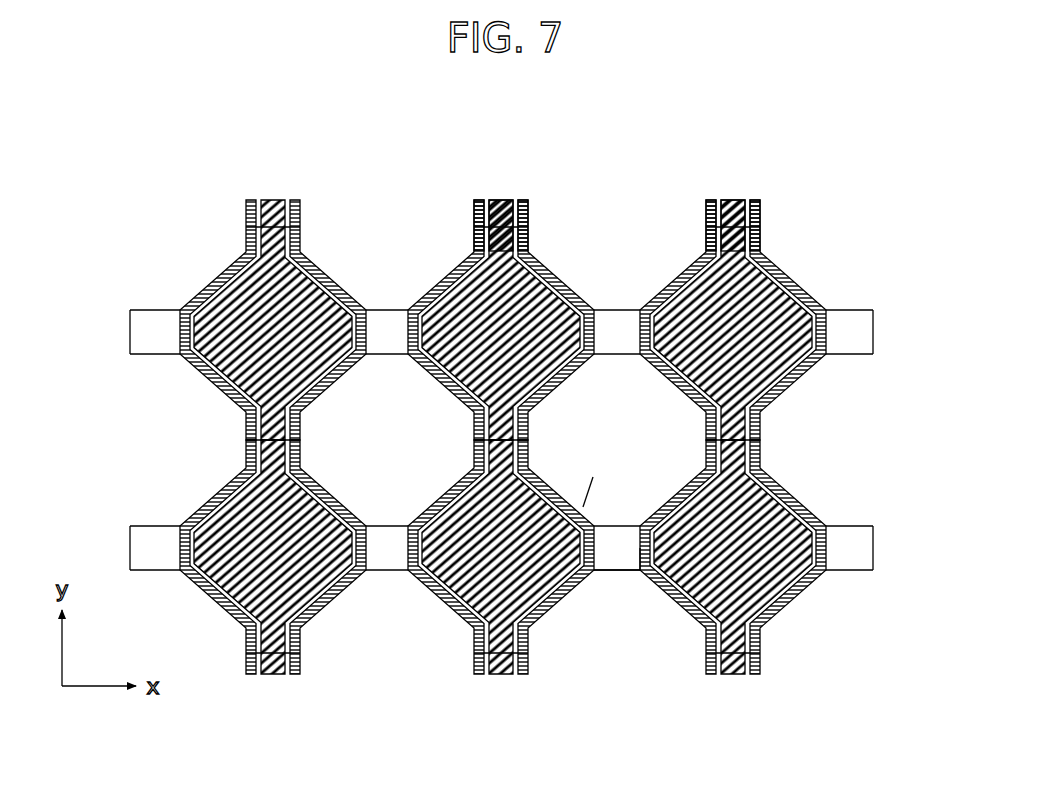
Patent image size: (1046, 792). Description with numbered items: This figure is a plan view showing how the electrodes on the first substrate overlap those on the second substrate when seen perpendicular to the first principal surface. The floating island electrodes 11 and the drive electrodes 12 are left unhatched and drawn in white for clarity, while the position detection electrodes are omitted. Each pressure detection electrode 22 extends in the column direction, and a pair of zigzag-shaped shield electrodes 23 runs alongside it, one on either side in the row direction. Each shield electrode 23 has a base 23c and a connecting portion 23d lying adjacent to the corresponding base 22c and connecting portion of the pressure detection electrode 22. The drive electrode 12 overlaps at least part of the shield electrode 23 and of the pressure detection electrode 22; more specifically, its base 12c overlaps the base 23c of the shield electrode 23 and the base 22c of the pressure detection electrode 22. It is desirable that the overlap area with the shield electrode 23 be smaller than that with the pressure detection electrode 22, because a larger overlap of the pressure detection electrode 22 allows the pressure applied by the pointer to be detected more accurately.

The floating island electrode 11 is at (567, 603).
The drive electrode 12 is at (876, 334).
The base of the drive electrode 12c is at (788, 256).
The pressure detection electrode 22 is at (503, 200).
The base of the pressure detection electrode 22c is at (737, 318).
The shield electrode 23 is at (477, 200).
The base of the shield electrode 23c is at (800, 292).
The connecting portion of the shield electrode 23d is at (641, 573).